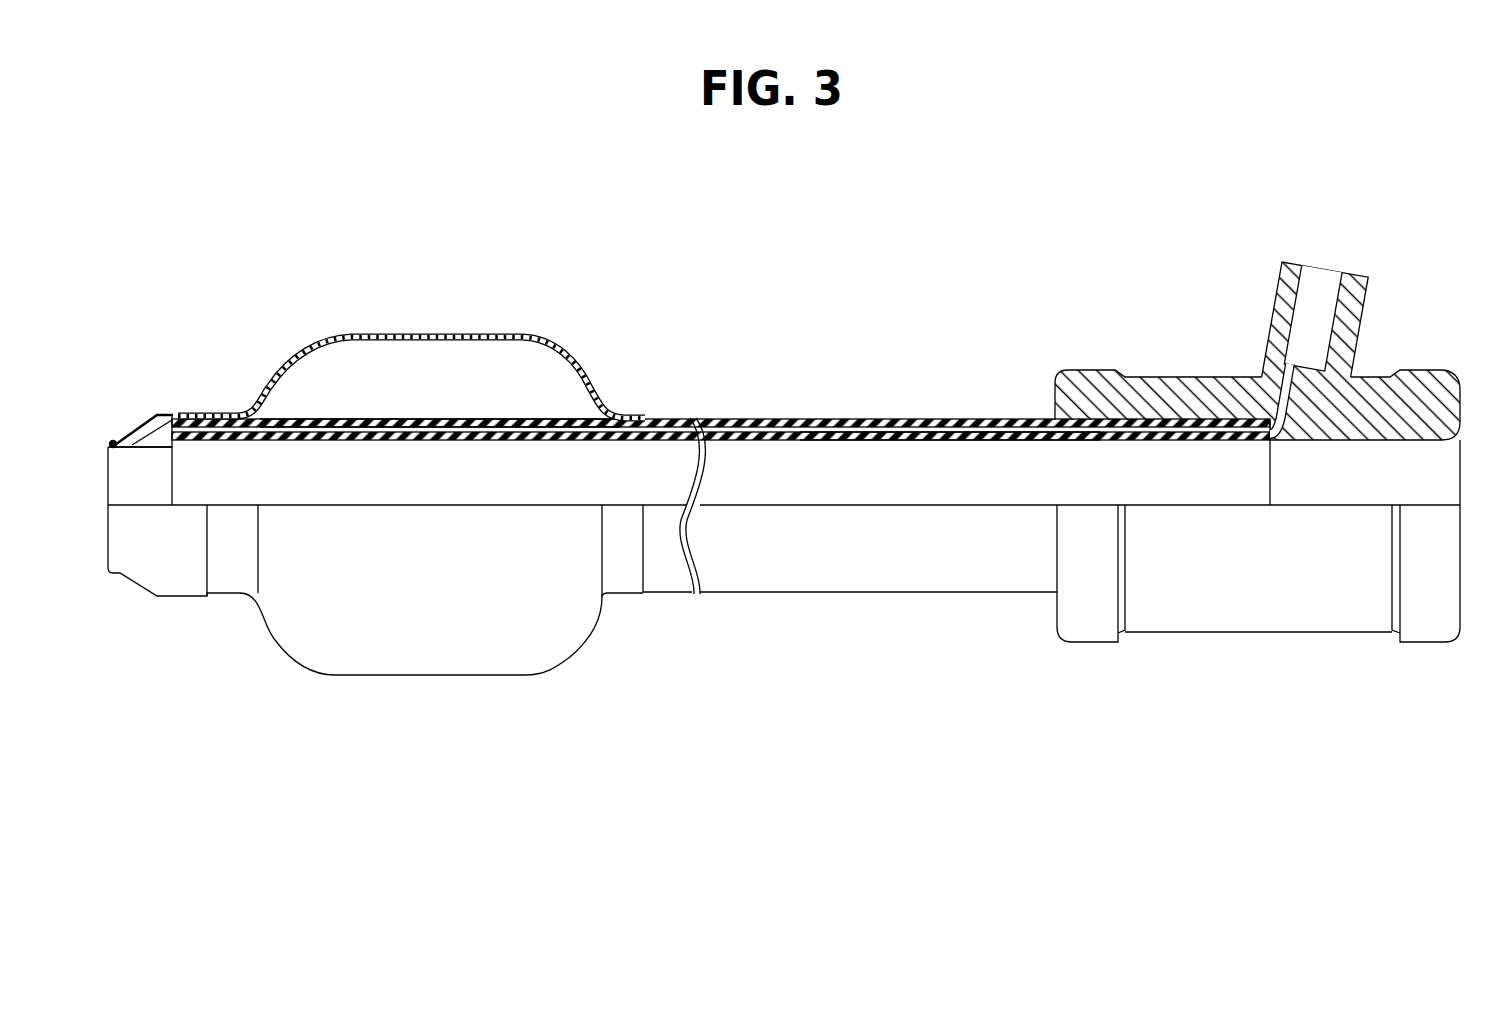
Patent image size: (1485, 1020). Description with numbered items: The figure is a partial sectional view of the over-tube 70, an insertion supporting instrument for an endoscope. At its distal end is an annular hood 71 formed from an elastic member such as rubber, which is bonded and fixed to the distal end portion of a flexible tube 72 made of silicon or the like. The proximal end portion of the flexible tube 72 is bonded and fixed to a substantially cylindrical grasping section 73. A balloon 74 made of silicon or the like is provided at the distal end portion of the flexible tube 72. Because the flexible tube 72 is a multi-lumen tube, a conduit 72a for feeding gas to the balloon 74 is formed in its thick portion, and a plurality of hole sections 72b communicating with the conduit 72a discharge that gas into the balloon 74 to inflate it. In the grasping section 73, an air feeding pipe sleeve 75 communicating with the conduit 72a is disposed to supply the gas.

The over-tube 70 is at (827, 340).
The annular hood 71 is at (171, 410).
The flexible tube 72 is at (784, 419).
The conduit 72a is at (948, 430).
The hole sections 72b is at (340, 419).
The grasping section 73 is at (1158, 376).
The balloon 74 is at (418, 333).
The air feeding pipe sleeve 75 is at (1270, 318).